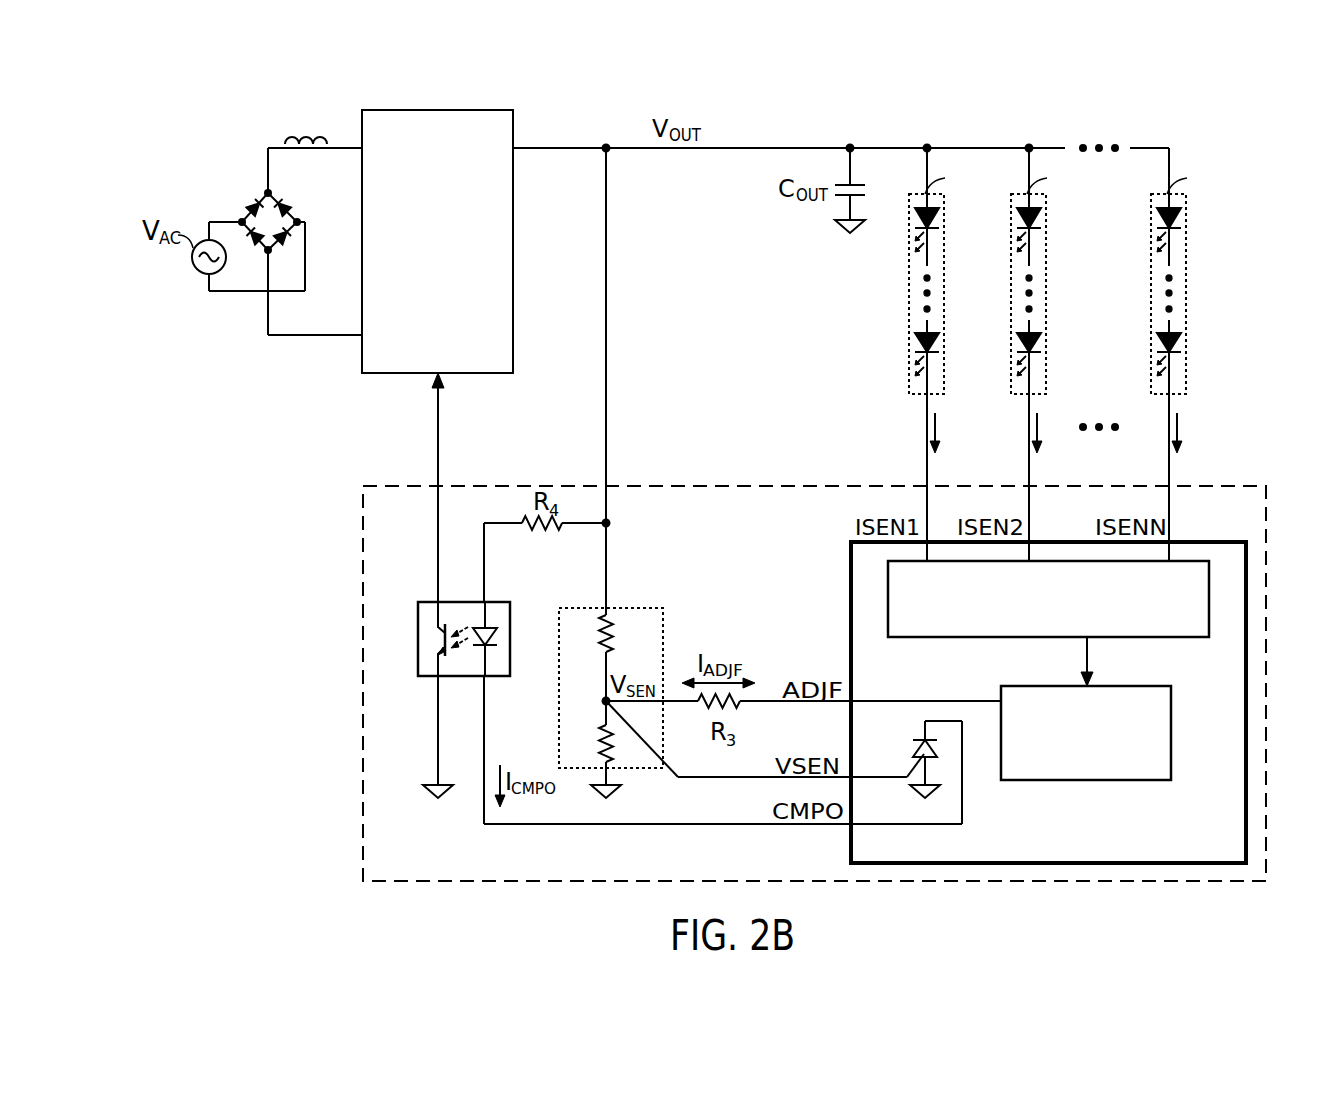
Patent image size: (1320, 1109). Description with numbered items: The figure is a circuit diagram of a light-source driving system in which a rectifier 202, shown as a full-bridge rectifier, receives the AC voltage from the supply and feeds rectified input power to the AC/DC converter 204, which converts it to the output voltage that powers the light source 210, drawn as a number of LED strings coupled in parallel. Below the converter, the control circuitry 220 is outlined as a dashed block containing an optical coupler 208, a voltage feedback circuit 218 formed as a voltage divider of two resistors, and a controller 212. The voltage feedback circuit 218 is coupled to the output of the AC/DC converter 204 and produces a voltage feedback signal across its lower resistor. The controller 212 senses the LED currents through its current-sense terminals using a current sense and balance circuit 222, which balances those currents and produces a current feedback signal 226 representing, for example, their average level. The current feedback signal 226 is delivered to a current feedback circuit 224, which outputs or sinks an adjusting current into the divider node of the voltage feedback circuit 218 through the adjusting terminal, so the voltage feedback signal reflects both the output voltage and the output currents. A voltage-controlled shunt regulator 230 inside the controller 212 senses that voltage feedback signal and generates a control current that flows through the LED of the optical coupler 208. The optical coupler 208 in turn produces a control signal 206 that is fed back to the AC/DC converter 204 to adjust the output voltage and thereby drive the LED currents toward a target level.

The rectifier 202 is at (263, 197).
The AC/DC converter 204 is at (457, 274).
The control signal 206 is at (438, 405).
The optical coupler 208 is at (419, 600).
The light source 210 is at (1188, 152).
The controller 212 is at (851, 615).
The voltage feedback circuit 218 is at (628, 607).
The control circuitry 220 is at (363, 508).
The current sense and balance circuit 222 is at (1169, 640).
The current feedback circuit 224 is at (1171, 730).
The current feedback signal 226 is at (1086, 655).
The voltage-controlled shunt regulator 230 is at (923, 740).